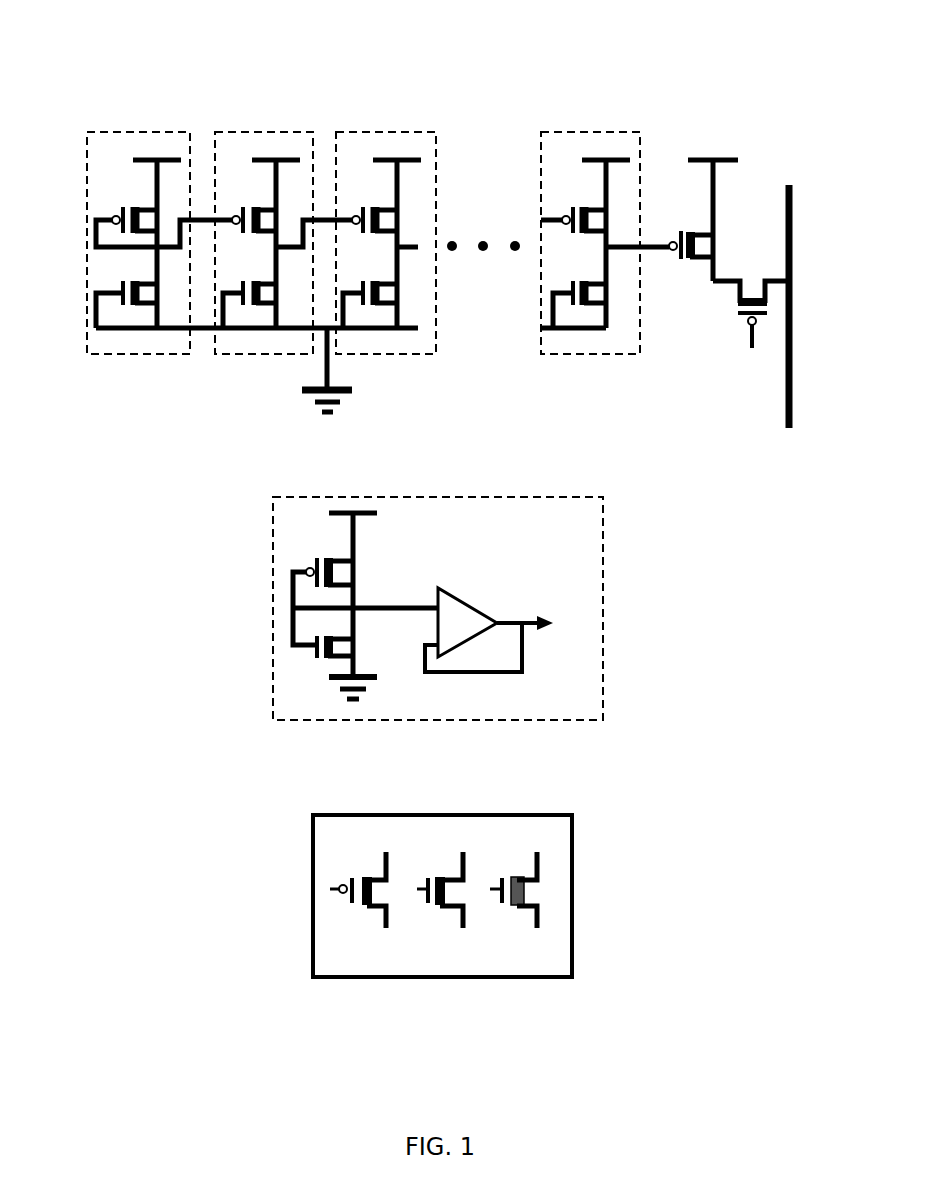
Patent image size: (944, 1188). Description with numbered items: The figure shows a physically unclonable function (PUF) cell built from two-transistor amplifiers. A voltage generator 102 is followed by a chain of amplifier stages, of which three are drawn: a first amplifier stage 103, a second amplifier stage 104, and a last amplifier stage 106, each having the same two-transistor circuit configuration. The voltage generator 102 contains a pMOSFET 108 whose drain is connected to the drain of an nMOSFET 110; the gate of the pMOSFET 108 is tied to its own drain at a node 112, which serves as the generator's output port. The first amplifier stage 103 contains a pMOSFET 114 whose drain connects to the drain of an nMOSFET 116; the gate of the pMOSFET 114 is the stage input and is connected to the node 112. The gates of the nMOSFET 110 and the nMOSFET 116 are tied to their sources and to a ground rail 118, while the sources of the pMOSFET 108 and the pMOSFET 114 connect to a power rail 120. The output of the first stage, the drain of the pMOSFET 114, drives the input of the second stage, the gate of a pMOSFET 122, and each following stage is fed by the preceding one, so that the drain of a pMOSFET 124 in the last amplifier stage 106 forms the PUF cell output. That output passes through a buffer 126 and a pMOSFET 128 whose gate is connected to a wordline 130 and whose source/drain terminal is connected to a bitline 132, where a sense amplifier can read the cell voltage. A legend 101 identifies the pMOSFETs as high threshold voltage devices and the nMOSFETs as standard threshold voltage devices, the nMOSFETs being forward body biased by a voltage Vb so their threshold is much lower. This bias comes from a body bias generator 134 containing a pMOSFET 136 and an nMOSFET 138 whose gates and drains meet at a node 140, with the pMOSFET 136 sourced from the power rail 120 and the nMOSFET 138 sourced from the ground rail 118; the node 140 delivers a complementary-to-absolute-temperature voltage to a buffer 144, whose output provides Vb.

The legend 101 is at (572, 848).
The voltage generator 102 is at (148, 257).
The first amplifier stage 103 is at (277, 286).
The second amplifier stage 104 is at (401, 255).
The last amplifier stage 106 is at (590, 261).
The pMOSFET 108 is at (134, 207).
The nMOSFET 110 is at (137, 306).
The node 112 is at (136, 248).
The pMOSFET 114 is at (254, 207).
The nMOSFET 116 is at (256, 306).
The ground rail 118 is at (342, 383).
The power rail 120 is at (167, 158).
The pMOSFET 122 is at (373, 207).
The pMOSFET 124 is at (582, 207).
The buffer 126 is at (694, 259).
The pMOSFET 128 is at (733, 303).
The wordline 130 is at (748, 350).
The bitline 132 is at (795, 393).
The body bias generator 134 is at (450, 608).
The pMOSFET 136 is at (332, 560).
The nMOSFET 138 is at (332, 658).
The node 140 is at (358, 609).
The buffer 144 is at (466, 600).